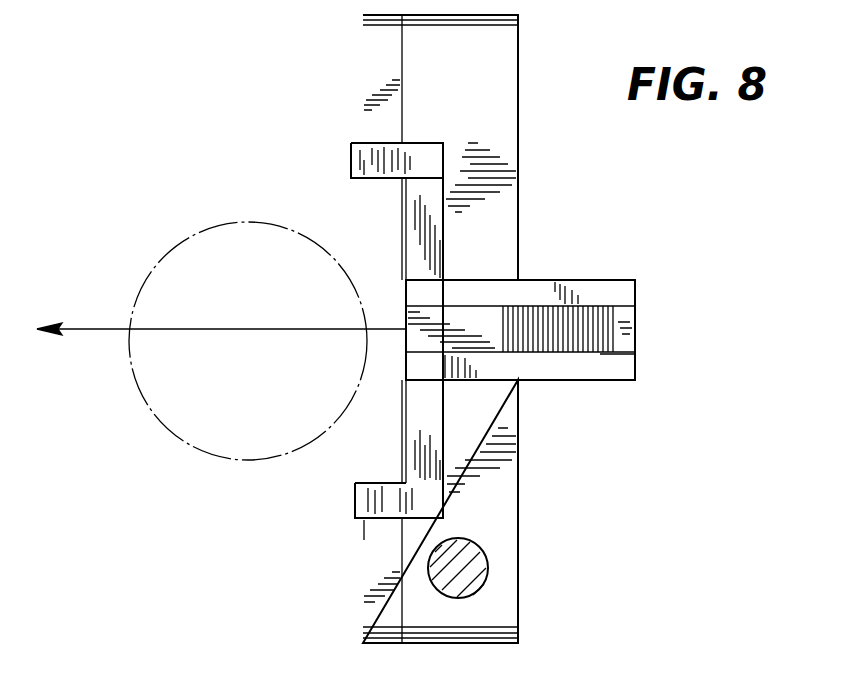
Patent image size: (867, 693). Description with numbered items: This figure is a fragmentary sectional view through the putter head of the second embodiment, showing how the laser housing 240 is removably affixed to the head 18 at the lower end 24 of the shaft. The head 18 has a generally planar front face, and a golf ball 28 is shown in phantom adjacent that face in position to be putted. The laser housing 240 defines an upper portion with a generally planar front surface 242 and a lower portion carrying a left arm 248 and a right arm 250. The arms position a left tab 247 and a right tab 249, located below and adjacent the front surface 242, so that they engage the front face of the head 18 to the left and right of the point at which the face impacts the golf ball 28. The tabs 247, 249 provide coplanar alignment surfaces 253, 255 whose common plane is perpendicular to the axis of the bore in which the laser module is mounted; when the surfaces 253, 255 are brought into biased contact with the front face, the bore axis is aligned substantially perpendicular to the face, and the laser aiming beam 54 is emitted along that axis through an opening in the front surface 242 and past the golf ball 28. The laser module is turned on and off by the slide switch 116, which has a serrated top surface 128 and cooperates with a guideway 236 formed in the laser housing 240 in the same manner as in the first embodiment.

The head 18 is at (363, 40).
The golf ball 28 is at (180, 245).
The laser aiming beam 54 is at (118, 328).
The slide switch 116 is at (577, 313).
The serrated top surface 128 is at (635, 325).
The guideway 236 is at (470, 305).
The laser housing 240 is at (618, 383).
The front surface 242 is at (398, 290).
The left tab 247 is at (351, 165).
The left arm 248 is at (421, 344).
The right tab 249 is at (355, 500).
The right arm 250 is at (428, 473).
The alignment surface 253 is at (378, 160).
The alignment surface 255 is at (370, 534).
The lower end of the shaft 24 is at (478, 566).